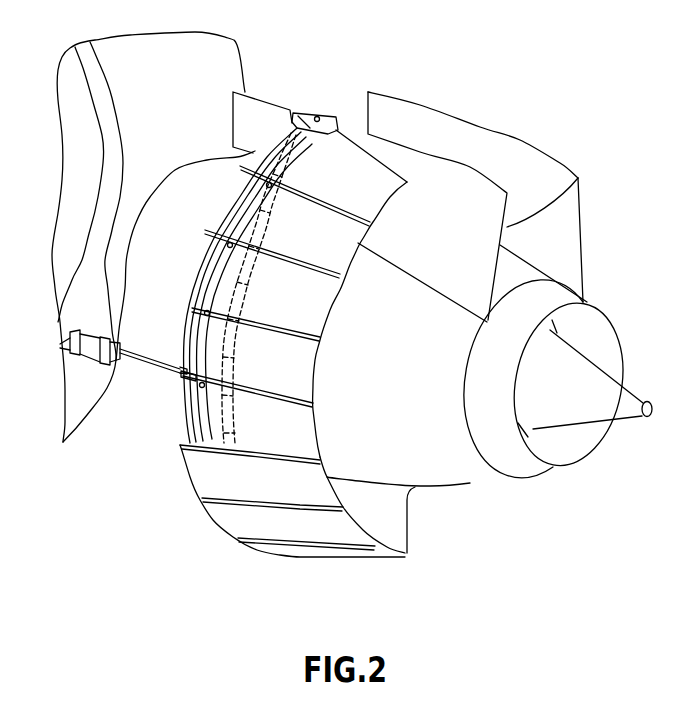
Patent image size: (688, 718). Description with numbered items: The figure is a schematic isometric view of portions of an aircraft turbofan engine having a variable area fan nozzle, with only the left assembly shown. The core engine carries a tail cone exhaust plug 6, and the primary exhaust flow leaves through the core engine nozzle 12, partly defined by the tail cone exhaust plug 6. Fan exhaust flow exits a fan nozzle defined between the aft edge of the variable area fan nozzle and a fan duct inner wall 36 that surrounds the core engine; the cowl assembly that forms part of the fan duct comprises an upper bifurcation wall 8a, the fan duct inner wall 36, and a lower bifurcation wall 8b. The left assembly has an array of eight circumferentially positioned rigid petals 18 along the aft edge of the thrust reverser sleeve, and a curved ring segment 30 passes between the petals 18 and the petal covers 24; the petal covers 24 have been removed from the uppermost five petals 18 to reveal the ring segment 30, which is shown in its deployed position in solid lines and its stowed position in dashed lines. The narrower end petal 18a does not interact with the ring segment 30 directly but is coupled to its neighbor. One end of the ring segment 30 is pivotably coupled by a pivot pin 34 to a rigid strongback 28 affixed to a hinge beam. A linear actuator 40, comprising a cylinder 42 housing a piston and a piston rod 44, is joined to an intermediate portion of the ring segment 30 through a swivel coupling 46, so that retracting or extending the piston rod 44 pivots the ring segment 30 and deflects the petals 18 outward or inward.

The tail cone exhaust plug 6 is at (610, 360).
The upper bifurcation wall 8a is at (578, 178).
The lower bifurcation wall 8b is at (407, 521).
The core engine nozzle 12 is at (543, 470).
The rigid petals 18 is at (318, 370).
The end petal 18a is at (345, 165).
The petal covers 24 is at (237, 518).
The strongback 28 is at (328, 116).
The ring segment 30 is at (210, 256).
The pivot pin 34 is at (317, 114).
The fan duct inner wall 36 is at (468, 481).
The actuator 40 is at (85, 372).
The cylinder 42 is at (92, 335).
The piston rod 44 is at (121, 366).
The swivel coupling 46 is at (186, 383).